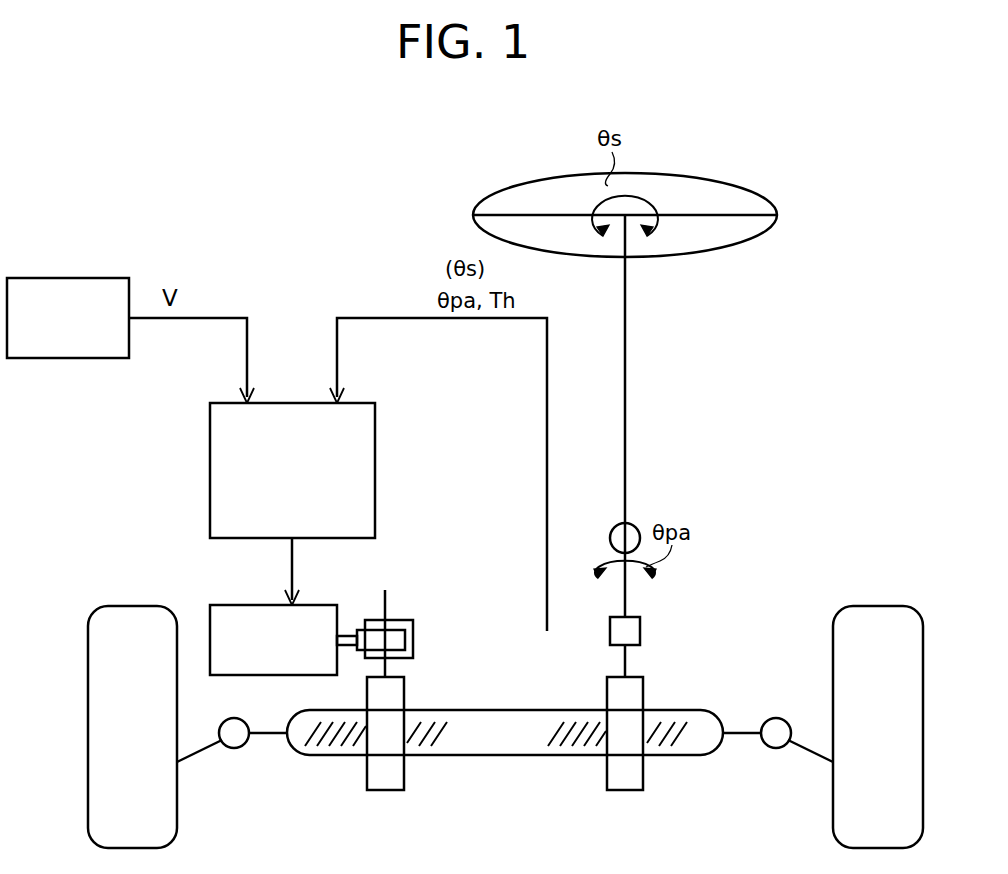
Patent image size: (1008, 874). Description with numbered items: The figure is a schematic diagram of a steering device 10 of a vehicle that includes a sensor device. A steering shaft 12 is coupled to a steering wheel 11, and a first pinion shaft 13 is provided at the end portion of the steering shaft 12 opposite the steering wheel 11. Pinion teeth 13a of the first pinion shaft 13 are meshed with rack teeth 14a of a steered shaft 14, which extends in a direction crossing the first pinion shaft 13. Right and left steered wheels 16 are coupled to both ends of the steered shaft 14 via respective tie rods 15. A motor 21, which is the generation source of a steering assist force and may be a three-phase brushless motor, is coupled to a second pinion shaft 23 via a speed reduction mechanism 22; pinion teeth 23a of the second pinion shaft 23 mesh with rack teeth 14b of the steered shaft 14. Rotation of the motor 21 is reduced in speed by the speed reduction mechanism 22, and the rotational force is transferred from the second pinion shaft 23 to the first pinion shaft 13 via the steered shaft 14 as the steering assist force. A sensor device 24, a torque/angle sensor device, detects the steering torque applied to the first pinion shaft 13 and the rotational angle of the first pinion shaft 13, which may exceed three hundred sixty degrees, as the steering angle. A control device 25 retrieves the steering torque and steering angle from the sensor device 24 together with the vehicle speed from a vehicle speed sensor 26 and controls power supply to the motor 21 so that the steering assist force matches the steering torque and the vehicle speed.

The steering device 10 is at (798, 174).
The steering wheel 11 is at (724, 175).
The steering shaft 12 is at (627, 478).
The first pinion shaft 13 is at (627, 662).
The pinion teeth 13a is at (625, 790).
The steered shaft 14 is at (501, 755).
The rack teeth 14a is at (580, 740).
The rack teeth 14b is at (420, 740).
The tie rod 15 is at (268, 745).
The steered wheel 16 is at (177, 813).
The motor 21 is at (320, 605).
The speed reduction mechanism 22 is at (418, 650).
The second pinion shaft 23 is at (388, 606).
The pinion teeth 23a is at (386, 790).
The sensor device 24 is at (641, 630).
The control device 25 is at (210, 472).
The vehicle speed sensor 26 is at (70, 278).